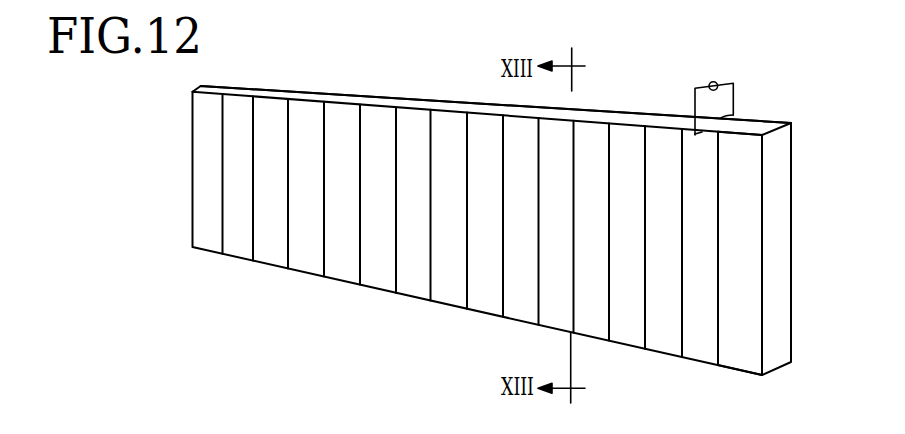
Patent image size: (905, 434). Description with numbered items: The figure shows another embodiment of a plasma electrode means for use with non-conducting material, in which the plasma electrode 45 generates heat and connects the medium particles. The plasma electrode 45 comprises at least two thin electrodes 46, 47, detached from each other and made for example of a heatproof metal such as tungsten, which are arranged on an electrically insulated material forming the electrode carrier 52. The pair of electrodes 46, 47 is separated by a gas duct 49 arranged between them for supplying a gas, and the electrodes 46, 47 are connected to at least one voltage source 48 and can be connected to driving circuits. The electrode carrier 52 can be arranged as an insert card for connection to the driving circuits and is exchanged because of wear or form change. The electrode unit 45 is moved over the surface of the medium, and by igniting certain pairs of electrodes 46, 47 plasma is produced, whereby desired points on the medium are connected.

The plasma electrode 45 is at (363, 70).
The gas duct 49 is at (457, 103).
The voltage source 48 is at (709, 85).
The electrode 47 is at (722, 118).
The electrode 46 is at (715, 340).
The electrode carrier 52 is at (743, 354).